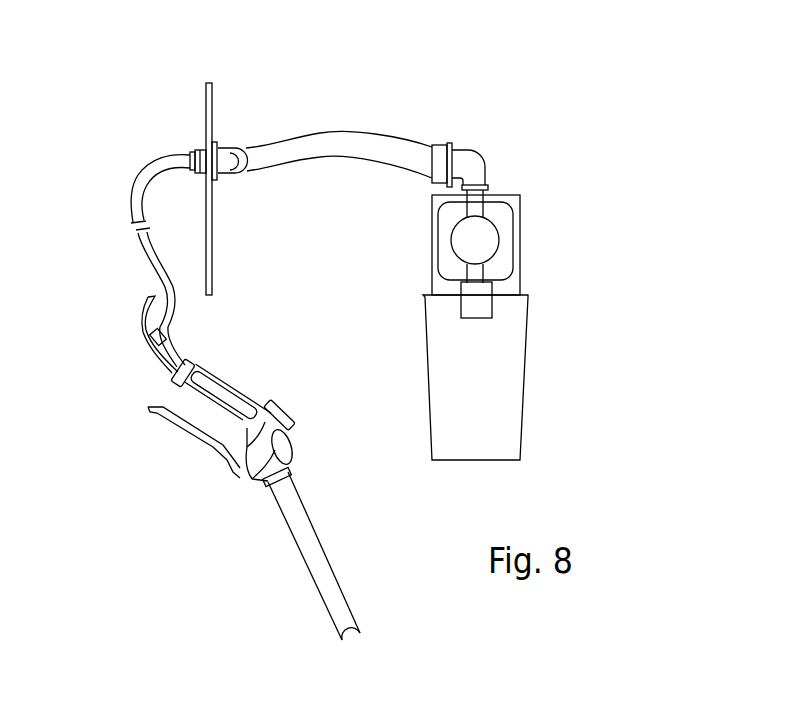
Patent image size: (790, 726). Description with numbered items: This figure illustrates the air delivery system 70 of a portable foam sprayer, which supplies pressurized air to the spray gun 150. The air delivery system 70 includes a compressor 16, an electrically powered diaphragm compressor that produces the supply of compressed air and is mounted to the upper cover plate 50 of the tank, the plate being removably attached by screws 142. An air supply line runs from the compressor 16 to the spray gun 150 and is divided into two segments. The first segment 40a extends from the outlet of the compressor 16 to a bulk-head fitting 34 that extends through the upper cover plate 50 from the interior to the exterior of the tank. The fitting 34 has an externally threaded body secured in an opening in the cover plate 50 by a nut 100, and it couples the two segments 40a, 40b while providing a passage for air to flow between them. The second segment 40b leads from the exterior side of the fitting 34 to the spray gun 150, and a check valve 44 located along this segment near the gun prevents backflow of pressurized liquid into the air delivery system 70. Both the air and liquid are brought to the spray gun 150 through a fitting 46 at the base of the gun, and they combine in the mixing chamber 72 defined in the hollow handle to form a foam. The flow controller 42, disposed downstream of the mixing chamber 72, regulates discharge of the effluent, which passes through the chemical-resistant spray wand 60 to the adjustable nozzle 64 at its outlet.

The compressor 16 is at (518, 413).
The bulk-head fitting 34 is at (213, 142).
The first segment of the air supply line 40a is at (347, 133).
The second segment of the air supply line 40b is at (130, 215).
The flow controller 42 is at (245, 480).
The check valve 44 is at (167, 352).
The fitting 46 is at (174, 371).
The upper cover plate 50 is at (212, 267).
The spray wand 60 is at (310, 578).
The nozzle 64 is at (354, 641).
The air delivery system 70 is at (553, 132).
The mixing chamber 72 is at (222, 397).
The nut 100 is at (217, 182).
The screws 142 is at (492, 309).
The spray gun 150 is at (330, 530).